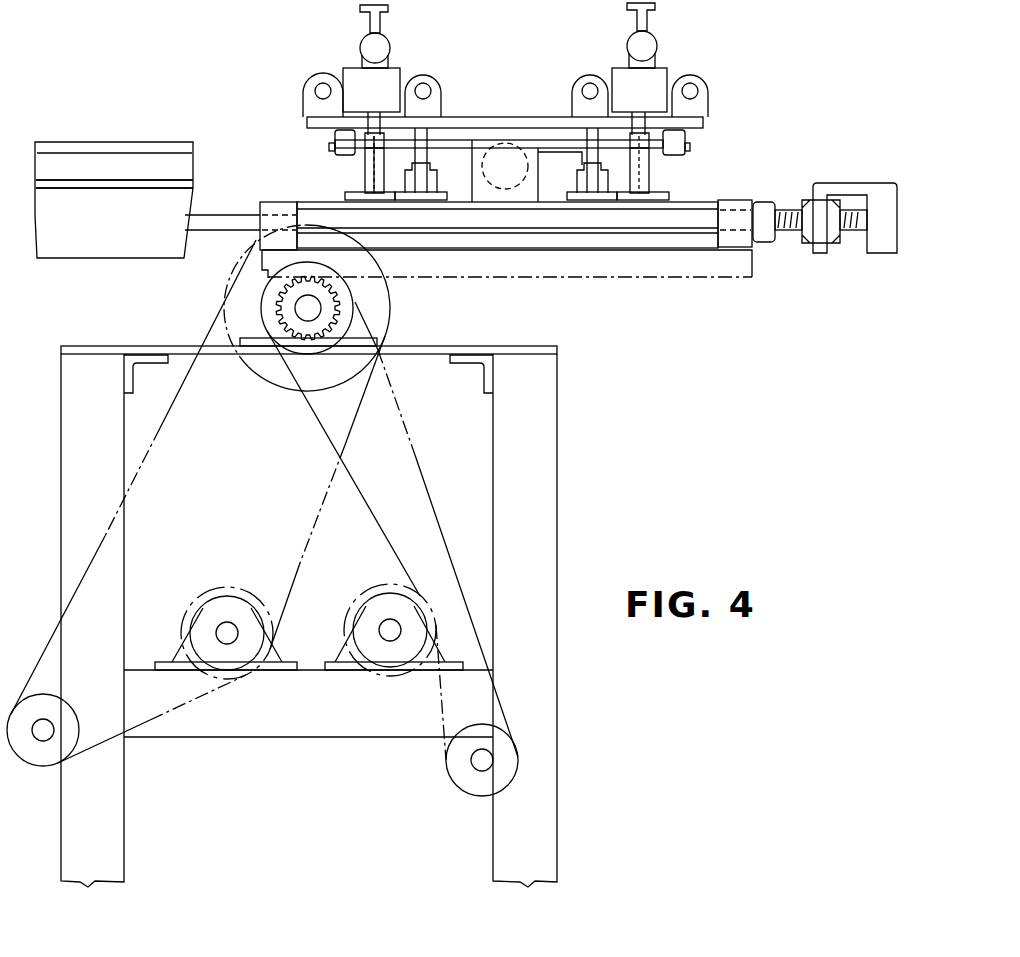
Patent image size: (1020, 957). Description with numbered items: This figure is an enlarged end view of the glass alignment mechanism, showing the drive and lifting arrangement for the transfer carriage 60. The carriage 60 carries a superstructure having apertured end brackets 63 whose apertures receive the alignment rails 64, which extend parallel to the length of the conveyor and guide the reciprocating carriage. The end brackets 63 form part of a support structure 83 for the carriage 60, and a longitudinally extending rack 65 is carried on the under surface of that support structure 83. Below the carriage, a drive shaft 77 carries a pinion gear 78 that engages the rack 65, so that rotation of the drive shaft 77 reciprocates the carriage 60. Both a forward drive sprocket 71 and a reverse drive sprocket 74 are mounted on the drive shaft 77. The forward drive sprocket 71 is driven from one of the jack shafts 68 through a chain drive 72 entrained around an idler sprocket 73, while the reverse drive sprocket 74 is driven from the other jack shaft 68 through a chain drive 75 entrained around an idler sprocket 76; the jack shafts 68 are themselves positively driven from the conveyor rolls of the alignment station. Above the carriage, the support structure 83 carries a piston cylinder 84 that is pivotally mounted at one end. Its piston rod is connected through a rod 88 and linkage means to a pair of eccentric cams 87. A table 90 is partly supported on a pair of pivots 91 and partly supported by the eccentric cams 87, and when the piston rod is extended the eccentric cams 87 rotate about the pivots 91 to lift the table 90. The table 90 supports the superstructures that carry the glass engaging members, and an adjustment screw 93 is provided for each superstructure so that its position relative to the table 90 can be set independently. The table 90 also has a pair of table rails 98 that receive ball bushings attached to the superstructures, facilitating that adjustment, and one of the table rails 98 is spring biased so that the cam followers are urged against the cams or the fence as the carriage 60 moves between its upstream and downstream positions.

The transfer carriage 60 is at (700, 286).
The apertured end brackets 63 is at (277, 203).
The alignment rails 64 is at (246, 215).
The rack 65 is at (391, 303).
The jack shafts 68 is at (220, 586).
The forward drive sprocket 71 is at (241, 258).
The chain drive 72 is at (96, 546).
The idler sprocket 73 is at (72, 704).
The reverse drive sprocket 74 is at (261, 299).
The chain drive 75 is at (413, 458).
The idler sprocket 76 is at (460, 733).
The drive shaft 77 is at (254, 366).
The pinion gear 78 is at (306, 350).
The support structure 83 is at (553, 201).
The piston cylinder 84 is at (503, 189).
The eccentric cams 87 is at (340, 136).
The rod 88 is at (457, 148).
The table 90 is at (500, 117).
The pivots 91 is at (440, 173).
The adjustment screw 93 is at (363, 42).
The table rails 98 is at (425, 84).